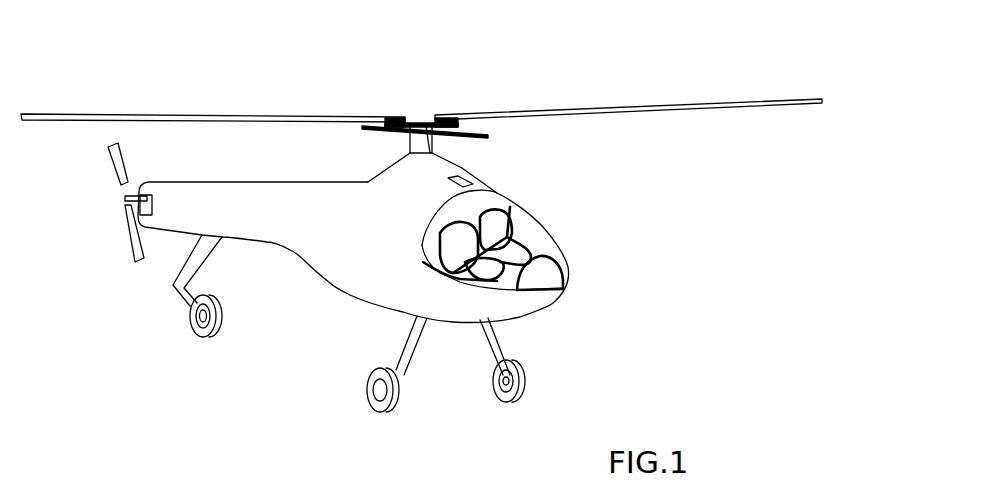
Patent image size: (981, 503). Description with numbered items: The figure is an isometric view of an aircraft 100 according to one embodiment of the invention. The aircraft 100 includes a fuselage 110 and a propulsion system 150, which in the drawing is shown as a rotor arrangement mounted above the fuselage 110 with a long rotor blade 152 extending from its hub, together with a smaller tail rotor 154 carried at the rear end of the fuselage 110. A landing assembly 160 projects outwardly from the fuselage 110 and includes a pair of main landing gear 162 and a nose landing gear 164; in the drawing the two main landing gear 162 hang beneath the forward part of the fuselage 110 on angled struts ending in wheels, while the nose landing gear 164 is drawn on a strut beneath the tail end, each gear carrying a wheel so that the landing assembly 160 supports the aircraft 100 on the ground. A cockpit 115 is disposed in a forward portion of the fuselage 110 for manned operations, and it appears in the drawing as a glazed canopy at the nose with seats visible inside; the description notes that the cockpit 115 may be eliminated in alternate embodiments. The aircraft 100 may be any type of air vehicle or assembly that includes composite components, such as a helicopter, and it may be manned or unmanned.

The aircraft 100 is at (117, 64).
The propulsion system 150 is at (456, 69).
The rotor blade 152 is at (590, 108).
The cockpit 115 is at (522, 197).
The fuselage 110 is at (550, 228).
The tail rotor 154 is at (130, 239).
The landing assembly 160 is at (284, 404).
The main landing gear 162 is at (487, 347).
The nose landing gear 164 is at (185, 299).